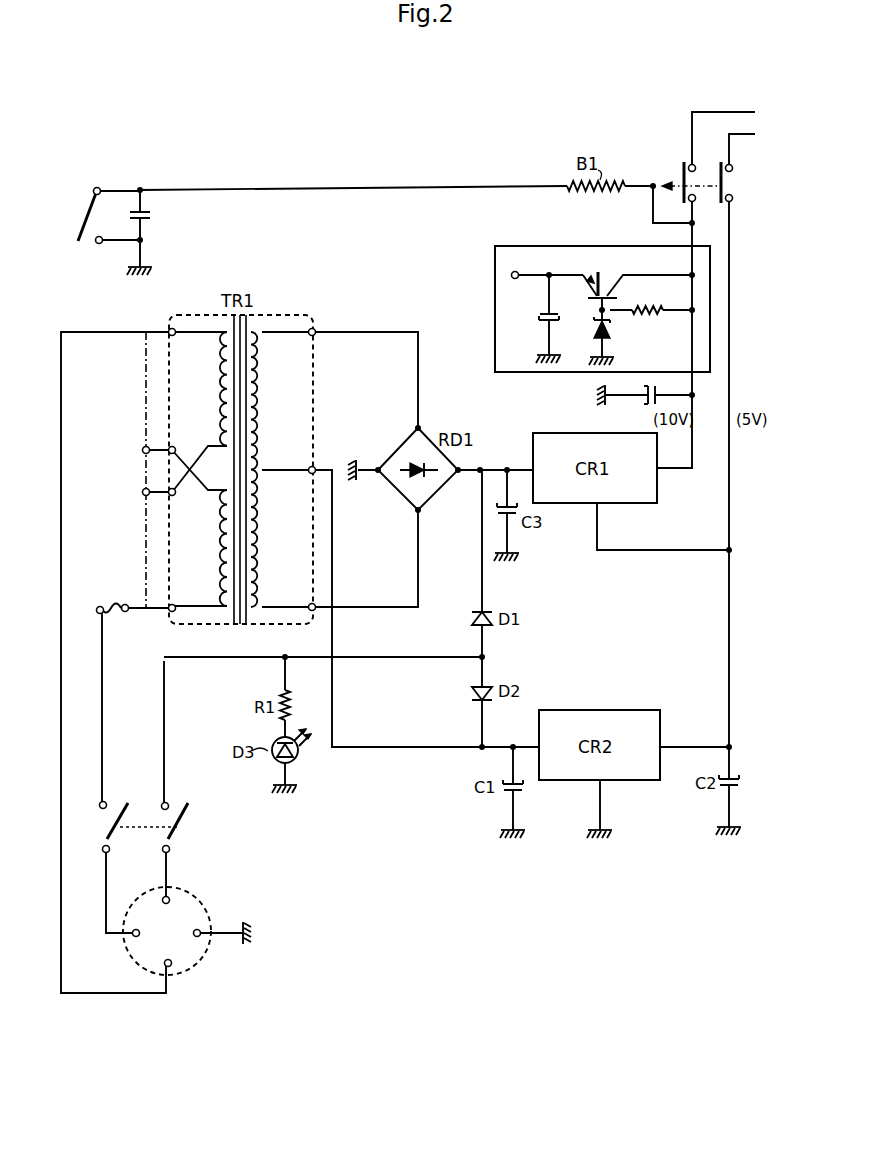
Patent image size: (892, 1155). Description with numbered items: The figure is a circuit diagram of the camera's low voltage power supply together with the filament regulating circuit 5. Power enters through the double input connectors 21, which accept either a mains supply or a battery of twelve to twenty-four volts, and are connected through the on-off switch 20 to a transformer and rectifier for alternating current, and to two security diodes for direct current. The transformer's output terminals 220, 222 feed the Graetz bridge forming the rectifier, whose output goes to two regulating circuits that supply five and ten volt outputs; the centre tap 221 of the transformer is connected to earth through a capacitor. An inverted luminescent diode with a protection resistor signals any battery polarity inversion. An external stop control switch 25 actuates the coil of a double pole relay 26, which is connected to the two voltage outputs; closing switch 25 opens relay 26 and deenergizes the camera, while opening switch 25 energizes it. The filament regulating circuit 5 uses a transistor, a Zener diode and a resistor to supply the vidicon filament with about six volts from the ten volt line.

The filament regulating circuit 5 is at (525, 258).
The switch 20 is at (182, 828).
The double input connectors 21 is at (136, 968).
The external stop control switch 25 is at (80, 220).
The double pole relay 26 is at (680, 161).
The output terminal 220 is at (307, 598).
The centre tap 221 is at (306, 460).
The output terminal 222 is at (306, 322).